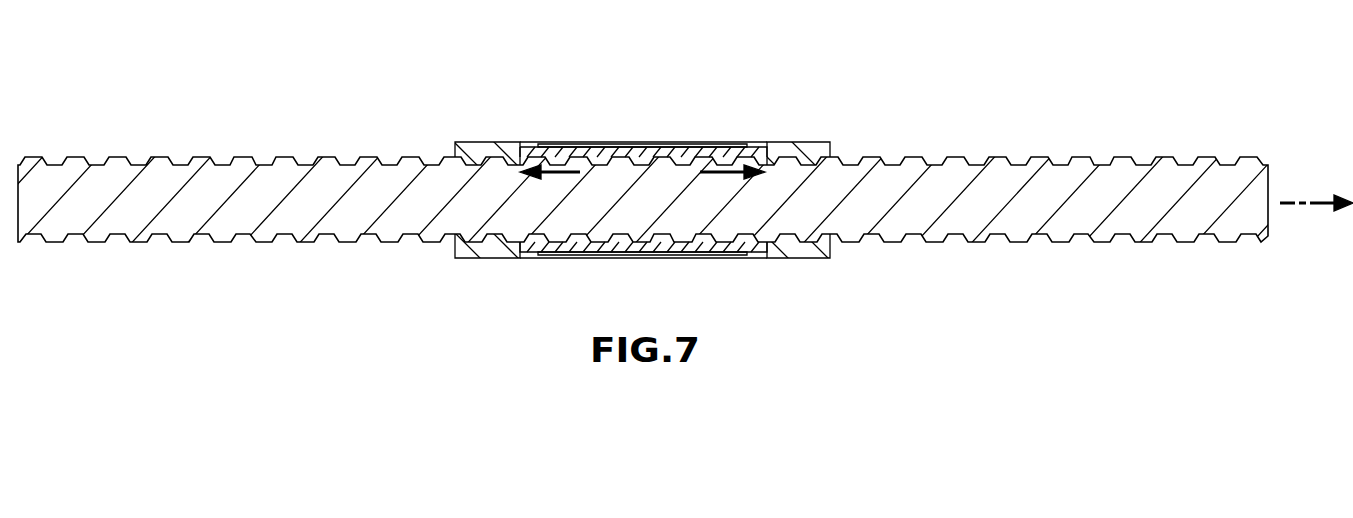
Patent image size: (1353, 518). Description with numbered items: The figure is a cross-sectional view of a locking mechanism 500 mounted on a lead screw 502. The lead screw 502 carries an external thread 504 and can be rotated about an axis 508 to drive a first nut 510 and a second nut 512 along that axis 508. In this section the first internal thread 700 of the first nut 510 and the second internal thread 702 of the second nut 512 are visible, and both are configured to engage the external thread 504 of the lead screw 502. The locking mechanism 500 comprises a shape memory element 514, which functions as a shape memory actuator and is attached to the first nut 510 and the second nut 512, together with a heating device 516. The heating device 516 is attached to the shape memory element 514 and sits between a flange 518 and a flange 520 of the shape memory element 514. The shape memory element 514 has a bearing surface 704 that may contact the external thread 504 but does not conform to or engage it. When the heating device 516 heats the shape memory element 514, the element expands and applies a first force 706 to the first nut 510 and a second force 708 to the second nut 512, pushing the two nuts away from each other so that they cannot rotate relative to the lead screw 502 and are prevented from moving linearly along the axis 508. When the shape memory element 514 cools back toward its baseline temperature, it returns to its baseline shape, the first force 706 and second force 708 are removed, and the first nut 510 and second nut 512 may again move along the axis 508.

The locking mechanism 500 is at (642, 162).
The lead screw 502 is at (262, 128).
The external thread 504 is at (330, 157).
The axis 508 is at (1310, 200).
The first nut 510 is at (463, 140).
The second nut 512 is at (762, 142).
The shape memory element 514 is at (520, 142).
The heating device 516 is at (623, 143).
The flange 518 is at (766, 259).
The flange 520 is at (528, 259).
The first internal thread 700 is at (481, 166).
The second internal thread 702 is at (825, 164).
The bearing surface 704 is at (691, 150).
The first force 706 is at (525, 240).
The second force 708 is at (705, 240).